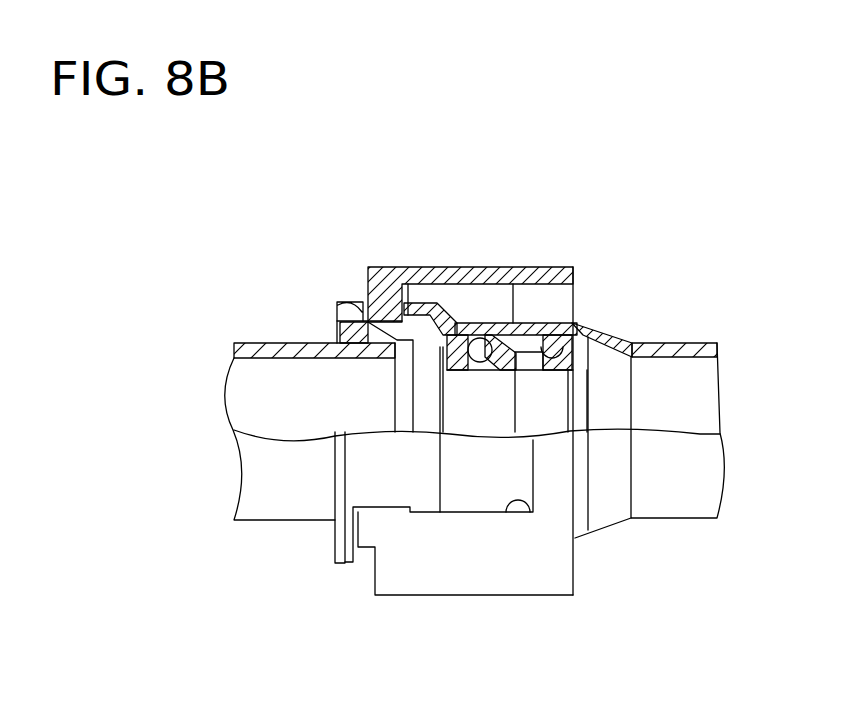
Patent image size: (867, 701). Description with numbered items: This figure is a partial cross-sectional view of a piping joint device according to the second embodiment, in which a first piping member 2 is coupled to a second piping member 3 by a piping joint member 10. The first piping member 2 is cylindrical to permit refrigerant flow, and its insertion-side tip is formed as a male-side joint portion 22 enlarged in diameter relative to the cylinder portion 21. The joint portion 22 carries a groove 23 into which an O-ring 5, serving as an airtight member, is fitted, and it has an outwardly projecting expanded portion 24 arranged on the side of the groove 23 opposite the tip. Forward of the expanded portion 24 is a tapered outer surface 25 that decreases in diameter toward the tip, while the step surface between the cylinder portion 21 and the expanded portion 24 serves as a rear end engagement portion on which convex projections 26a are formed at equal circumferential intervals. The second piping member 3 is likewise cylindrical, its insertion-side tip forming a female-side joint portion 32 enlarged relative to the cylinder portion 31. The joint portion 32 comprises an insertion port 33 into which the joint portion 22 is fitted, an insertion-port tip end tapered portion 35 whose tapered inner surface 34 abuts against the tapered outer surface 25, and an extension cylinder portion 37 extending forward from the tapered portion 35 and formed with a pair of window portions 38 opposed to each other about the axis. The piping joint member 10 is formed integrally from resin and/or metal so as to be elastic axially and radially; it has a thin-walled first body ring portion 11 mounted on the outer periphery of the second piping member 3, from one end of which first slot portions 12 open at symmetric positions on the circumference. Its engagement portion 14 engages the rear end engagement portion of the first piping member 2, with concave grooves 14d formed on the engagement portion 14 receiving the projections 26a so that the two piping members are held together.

The first piping member 2 is at (212, 326).
The cylinder portion 21 is at (247, 340).
The second piping member 3 is at (682, 332).
The cylinder portion 31 is at (698, 350).
The female-side joint portion 32 is at (527, 312).
The insertion port 33 is at (587, 327).
The piping joint member 10 is at (536, 260).
The first body ring portion 11 is at (505, 267).
The first slot portions 12 is at (533, 372).
The male-side joint portion 22 is at (575, 537).
The window portions 38 is at (392, 267).
The extension cylinder portion 37 is at (341, 300).
The engagement portion 14 is at (378, 298).
The grooves 14d is at (357, 300).
The projections 26a is at (340, 322).
The tapered outer surface 25 is at (340, 565).
The expanded portion 24 is at (424, 302).
The insertion-port tip end tapered portion 35 is at (443, 305).
The tapered inner surface 34 is at (482, 325).
The groove 23 is at (469, 365).
The O-ring 5 is at (483, 362).